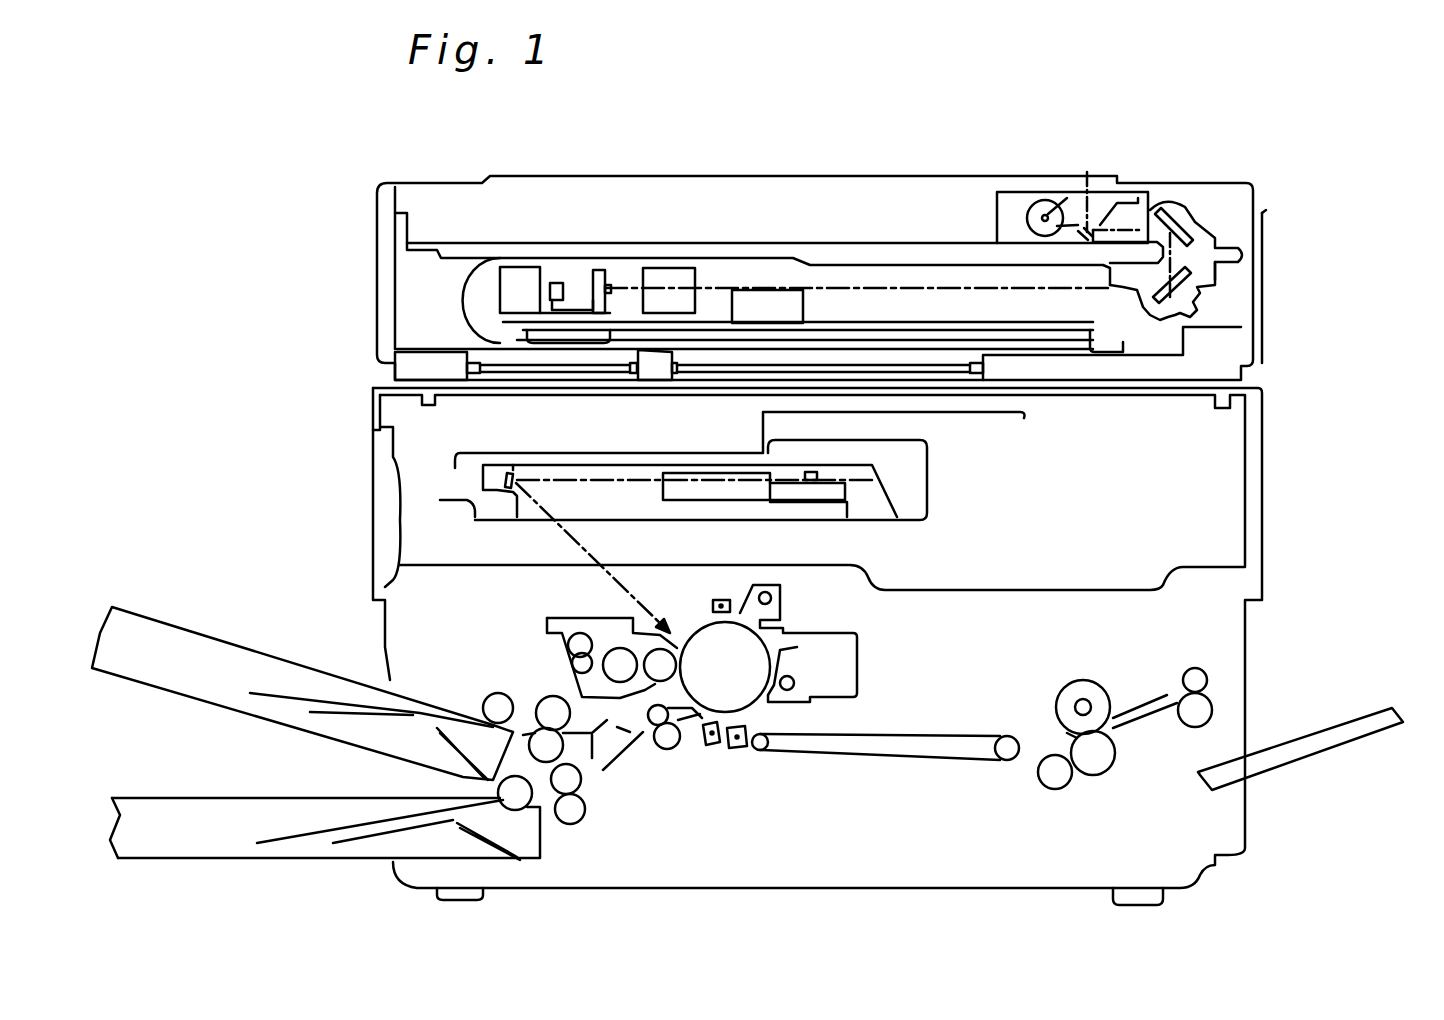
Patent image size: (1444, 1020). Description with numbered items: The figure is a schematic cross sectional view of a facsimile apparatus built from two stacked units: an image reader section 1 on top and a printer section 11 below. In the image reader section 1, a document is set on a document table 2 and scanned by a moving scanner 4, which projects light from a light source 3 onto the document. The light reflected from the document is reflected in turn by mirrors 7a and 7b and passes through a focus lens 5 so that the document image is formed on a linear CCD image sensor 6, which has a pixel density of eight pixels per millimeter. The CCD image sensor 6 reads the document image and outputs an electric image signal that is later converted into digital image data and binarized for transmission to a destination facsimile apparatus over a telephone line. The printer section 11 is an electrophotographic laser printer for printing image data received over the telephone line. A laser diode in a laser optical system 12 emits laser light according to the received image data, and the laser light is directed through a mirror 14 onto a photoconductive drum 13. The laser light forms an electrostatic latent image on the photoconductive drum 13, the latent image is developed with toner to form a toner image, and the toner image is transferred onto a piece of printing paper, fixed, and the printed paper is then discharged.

The image reader section 1 is at (1262, 258).
The document table 2 is at (1086, 182).
The light source 3 is at (1043, 214).
The moving scanner 4 is at (996, 226).
The focus lens 5 is at (682, 267).
The linear CCD image sensor 6 is at (616, 282).
The mirror 7a is at (1184, 208).
The mirror 7b is at (1196, 288).
The printer section 11 is at (1262, 462).
The laser optical system 12 is at (920, 479).
The photoconductive drum 13 is at (738, 685).
The mirror 14 is at (505, 478).